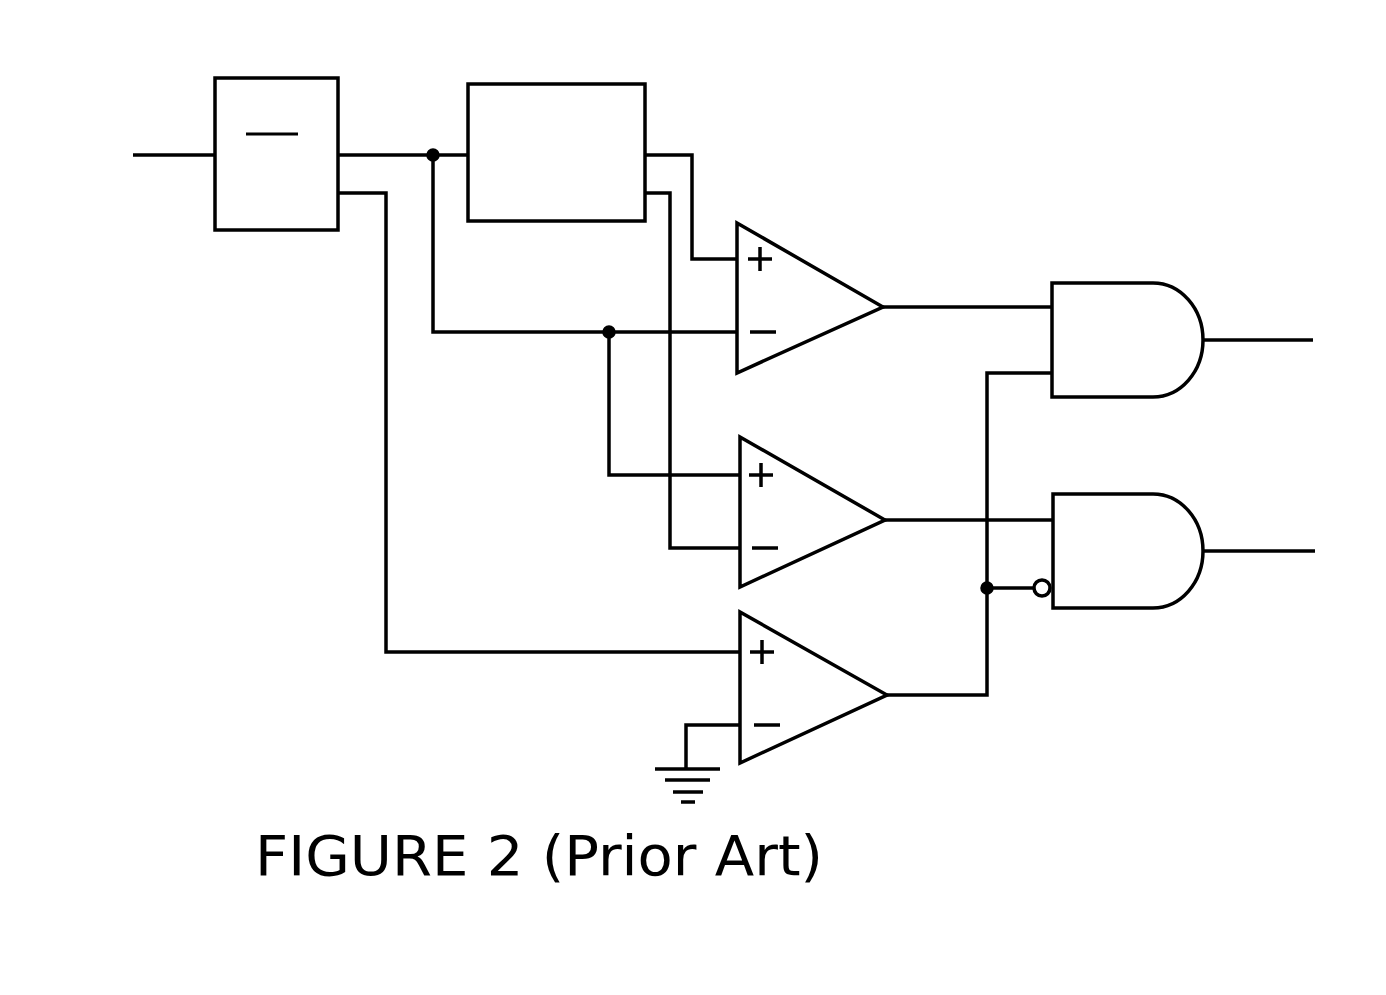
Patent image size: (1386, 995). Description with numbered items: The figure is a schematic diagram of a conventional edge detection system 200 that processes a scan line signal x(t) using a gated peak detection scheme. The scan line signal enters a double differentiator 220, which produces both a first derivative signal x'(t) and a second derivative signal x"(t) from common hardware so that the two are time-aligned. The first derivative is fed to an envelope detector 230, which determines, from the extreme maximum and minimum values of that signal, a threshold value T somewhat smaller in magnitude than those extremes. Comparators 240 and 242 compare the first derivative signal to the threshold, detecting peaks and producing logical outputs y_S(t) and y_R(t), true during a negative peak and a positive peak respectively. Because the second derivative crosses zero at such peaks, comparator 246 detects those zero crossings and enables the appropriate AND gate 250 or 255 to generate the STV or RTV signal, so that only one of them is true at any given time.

The edge detection system 200 is at (838, 178).
The double differentiator 220 is at (304, 218).
The envelope detector 230 is at (584, 213).
The comparator 240 is at (830, 318).
The comparator 242 is at (833, 531).
The comparator 246 is at (841, 706).
The logical AND gate 250 is at (1153, 358).
The logical AND gate 255 is at (1165, 569).